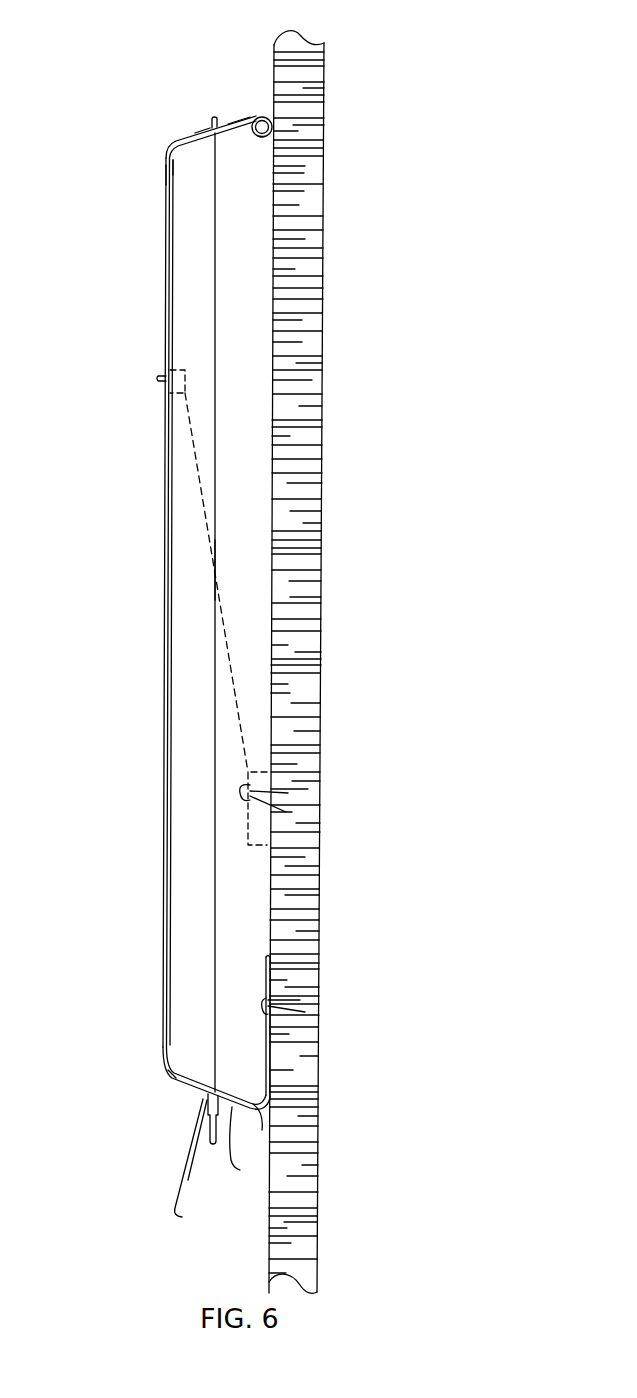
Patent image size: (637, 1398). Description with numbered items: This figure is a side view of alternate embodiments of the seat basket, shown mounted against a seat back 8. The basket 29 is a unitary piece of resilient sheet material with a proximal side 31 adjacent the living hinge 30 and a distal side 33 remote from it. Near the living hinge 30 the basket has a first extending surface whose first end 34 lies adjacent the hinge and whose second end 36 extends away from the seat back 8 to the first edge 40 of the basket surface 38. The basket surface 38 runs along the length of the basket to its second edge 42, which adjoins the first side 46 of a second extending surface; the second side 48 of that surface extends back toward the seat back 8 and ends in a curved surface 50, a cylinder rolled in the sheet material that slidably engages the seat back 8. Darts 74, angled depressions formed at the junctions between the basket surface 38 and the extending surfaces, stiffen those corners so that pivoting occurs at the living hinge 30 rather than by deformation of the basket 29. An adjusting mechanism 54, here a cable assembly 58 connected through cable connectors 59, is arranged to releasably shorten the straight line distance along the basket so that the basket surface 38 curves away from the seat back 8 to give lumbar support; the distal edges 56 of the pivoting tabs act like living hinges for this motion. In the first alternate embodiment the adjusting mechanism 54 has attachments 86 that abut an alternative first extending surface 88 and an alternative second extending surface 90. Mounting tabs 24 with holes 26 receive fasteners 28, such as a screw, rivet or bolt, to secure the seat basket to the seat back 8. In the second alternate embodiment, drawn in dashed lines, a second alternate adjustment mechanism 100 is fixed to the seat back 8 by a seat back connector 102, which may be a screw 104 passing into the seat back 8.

The seat back 8 is at (322, 696).
The mounting tabs 24 is at (267, 957).
The holes 26 is at (266, 997).
The fasteners 28 is at (262, 1000).
The basket 29 is at (163, 570).
The living hinge 30 is at (250, 1129).
The proximal side 31 is at (200, 1099).
The distal side 33 is at (235, 123).
The first end 34 is at (250, 1147).
The second end 36 is at (172, 1085).
The basket surface 38 is at (163, 738).
The first edge 40 is at (162, 1062).
The second edge 42 is at (166, 170).
The first side 46 is at (178, 144).
The second side 48 is at (257, 137).
The curved surface 50 is at (270, 117).
The adjusting mechanism 54 is at (215, 483).
The distal edges 56 is at (220, 125).
The cable assembly 58 is at (215, 570).
The cable connectors 59 is at (177, 378).
The darts 74 is at (178, 148).
The attachments 86 is at (212, 128).
The alternative first extending surface 88 is at (210, 1113).
The alternative second extending surface 90 is at (202, 131).
The second alternate adjustment mechanism 100 is at (223, 630).
The seat back connector 102 is at (263, 776).
The screw 104 is at (250, 796).